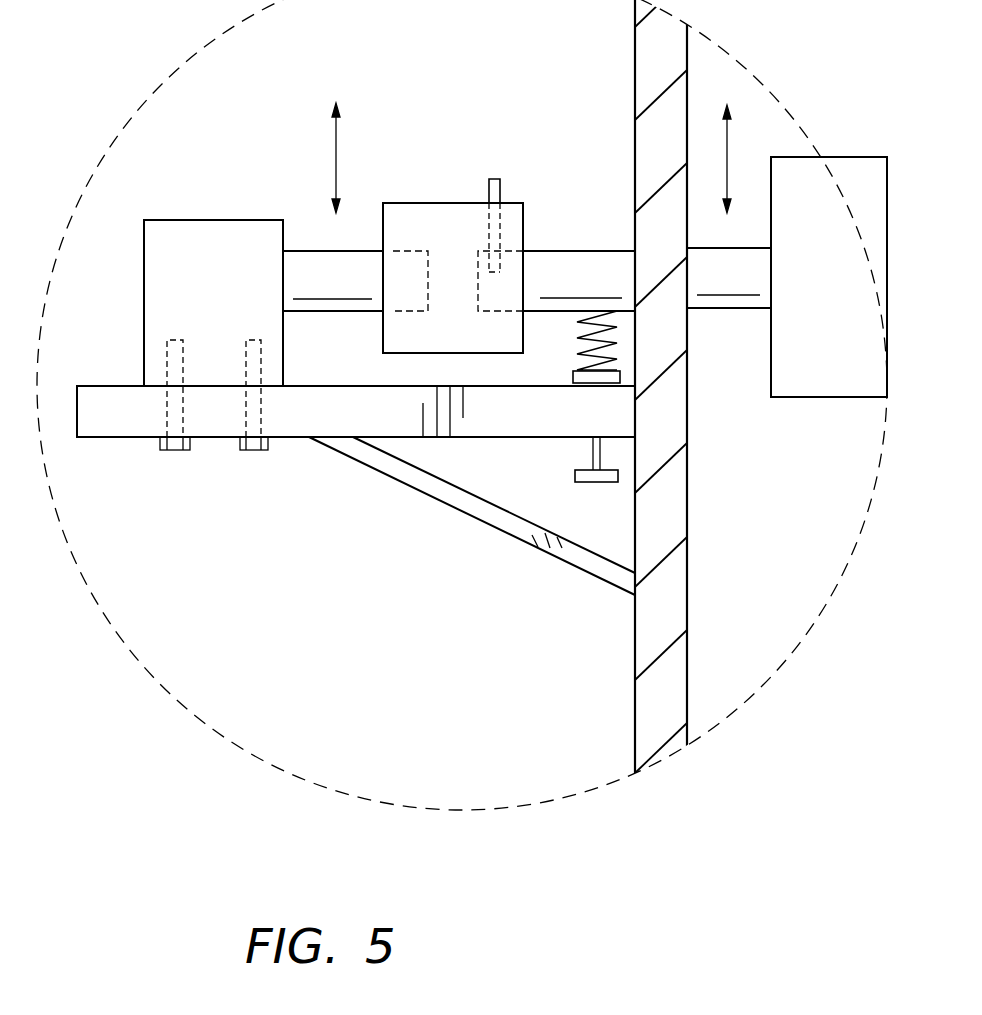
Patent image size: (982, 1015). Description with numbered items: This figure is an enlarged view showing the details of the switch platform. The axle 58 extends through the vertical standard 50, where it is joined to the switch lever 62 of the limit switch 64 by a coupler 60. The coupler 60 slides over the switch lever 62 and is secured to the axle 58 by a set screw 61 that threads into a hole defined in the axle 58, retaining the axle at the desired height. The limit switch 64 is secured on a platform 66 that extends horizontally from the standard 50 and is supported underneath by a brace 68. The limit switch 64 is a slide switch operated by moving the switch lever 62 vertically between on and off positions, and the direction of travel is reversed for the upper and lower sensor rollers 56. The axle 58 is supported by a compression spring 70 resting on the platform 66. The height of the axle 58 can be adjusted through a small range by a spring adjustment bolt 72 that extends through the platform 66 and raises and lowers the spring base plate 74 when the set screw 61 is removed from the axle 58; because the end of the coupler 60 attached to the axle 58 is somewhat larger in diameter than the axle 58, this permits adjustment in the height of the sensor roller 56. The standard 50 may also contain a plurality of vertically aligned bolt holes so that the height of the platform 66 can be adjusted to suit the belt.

The standard 50 is at (690, 585).
The sensor roller 56 is at (840, 341).
The axle 58 is at (612, 250).
The coupler 60 is at (440, 203).
The set screw 61 is at (487, 192).
The switch lever 62 is at (312, 251).
The limit switch 64 is at (163, 220).
The platform 66 is at (113, 430).
The brace 68 is at (447, 505).
The compression spring 70 is at (615, 322).
The spring adjustment bolt 72 is at (576, 480).
The spring base plate 74 is at (622, 368).